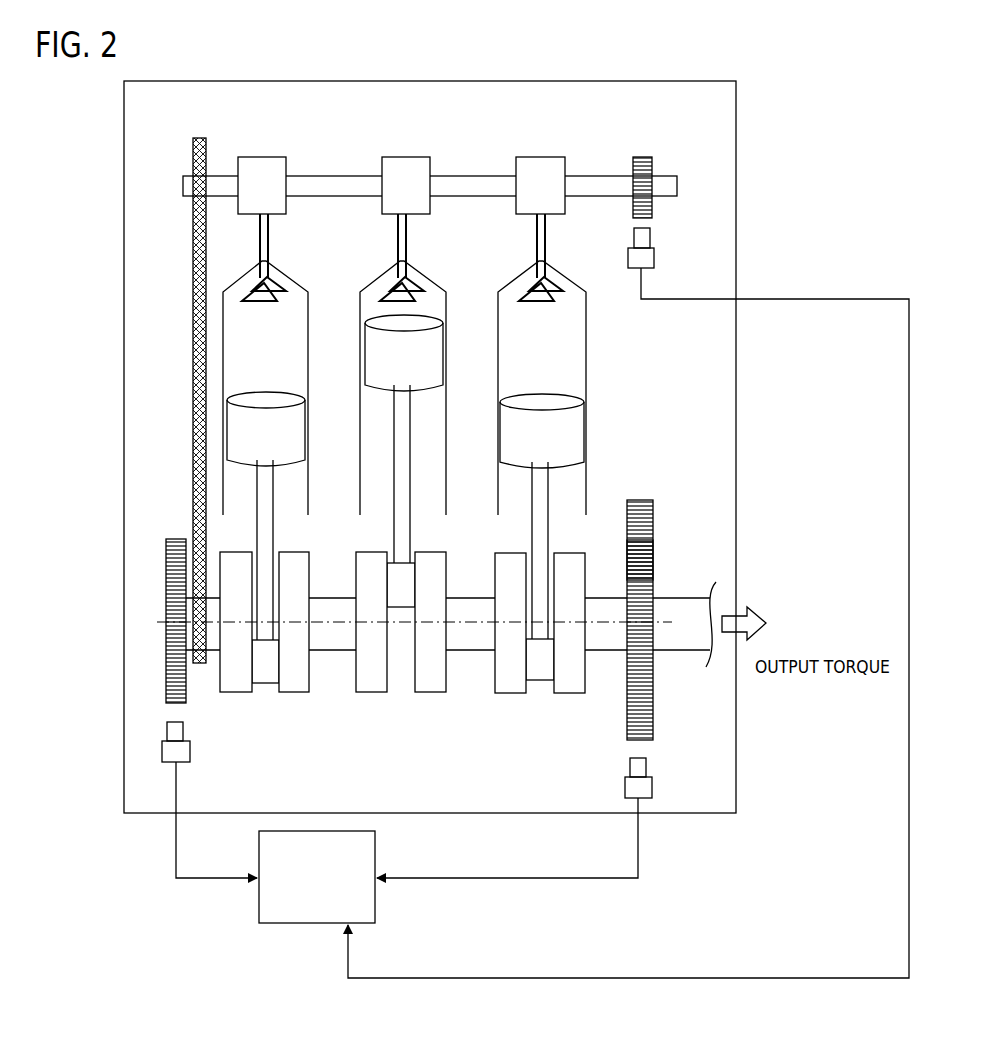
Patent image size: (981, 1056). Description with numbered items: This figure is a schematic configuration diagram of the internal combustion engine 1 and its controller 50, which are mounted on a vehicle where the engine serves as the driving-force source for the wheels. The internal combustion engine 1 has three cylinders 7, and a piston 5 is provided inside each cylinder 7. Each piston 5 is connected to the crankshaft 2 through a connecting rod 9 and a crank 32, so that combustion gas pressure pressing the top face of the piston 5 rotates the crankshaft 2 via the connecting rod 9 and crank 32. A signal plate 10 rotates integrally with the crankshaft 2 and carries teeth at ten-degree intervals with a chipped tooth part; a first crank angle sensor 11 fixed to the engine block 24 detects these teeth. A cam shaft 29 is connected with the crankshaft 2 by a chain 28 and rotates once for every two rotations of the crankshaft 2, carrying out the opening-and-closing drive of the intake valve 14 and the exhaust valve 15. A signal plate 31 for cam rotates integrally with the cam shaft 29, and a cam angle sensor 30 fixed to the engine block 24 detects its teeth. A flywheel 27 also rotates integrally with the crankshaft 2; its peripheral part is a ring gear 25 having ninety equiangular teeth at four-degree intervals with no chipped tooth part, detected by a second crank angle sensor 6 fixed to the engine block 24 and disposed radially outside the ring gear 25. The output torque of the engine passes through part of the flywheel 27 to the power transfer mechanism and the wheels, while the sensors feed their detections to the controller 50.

The internal combustion engine 1 is at (125, 202).
The crankshaft 2 is at (436, 643).
The piston 5 is at (545, 400).
The second crank angle sensor 6 is at (652, 787).
The cylinder 7 is at (587, 338).
The connecting rod 9 is at (550, 527).
The signal plate 10 is at (167, 540).
The first crank angle sensor 11 is at (162, 752).
The intake valve 14 is at (547, 280).
The exhaust valve 15 is at (522, 296).
The engine block 24 is at (736, 405).
The ring gear 25 is at (639, 500).
The flywheel 27 is at (654, 560).
The chain 28 is at (193, 400).
The cam shaft 29 is at (325, 172).
The cam angle sensor 30 is at (654, 258).
The signal plate for cam 31 is at (643, 157).
The crank 32 is at (447, 577).
The controller 50 is at (259, 902).